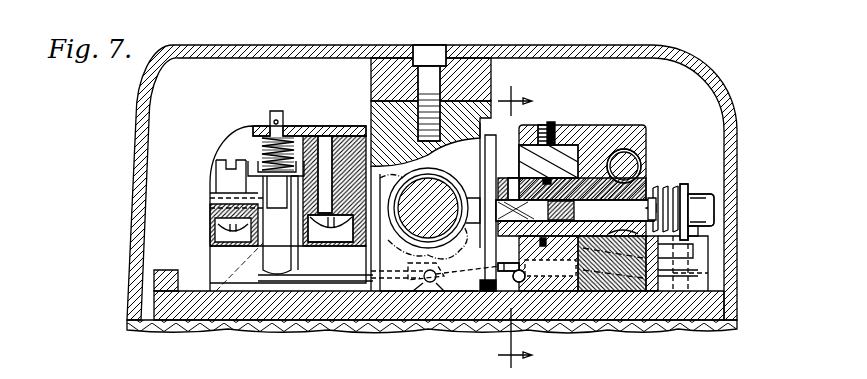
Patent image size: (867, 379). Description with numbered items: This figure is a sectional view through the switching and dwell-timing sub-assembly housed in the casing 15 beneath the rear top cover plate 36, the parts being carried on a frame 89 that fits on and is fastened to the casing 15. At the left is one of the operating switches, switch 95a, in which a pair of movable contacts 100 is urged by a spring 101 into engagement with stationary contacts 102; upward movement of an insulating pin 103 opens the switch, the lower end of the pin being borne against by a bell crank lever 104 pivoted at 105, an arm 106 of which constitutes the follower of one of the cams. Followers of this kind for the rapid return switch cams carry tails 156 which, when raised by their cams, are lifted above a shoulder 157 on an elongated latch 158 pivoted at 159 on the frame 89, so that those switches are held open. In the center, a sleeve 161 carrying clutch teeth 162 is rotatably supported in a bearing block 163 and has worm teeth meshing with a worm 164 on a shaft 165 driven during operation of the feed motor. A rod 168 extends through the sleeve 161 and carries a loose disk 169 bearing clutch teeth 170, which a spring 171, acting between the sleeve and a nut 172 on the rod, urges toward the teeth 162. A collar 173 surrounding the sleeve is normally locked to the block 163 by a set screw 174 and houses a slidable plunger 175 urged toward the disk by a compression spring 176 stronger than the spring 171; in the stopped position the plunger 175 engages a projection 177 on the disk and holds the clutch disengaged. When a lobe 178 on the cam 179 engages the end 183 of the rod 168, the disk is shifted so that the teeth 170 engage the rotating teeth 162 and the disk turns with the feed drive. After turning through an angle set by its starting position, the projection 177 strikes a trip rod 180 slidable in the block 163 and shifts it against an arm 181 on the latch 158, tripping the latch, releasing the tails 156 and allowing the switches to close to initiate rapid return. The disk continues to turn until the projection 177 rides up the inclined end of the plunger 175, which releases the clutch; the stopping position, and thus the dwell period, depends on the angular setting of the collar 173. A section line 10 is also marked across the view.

The rear top cover plate 36 is at (729, 100).
The casing 15 is at (729, 318).
The frame 89 is at (180, 283).
The spring 101 is at (252, 110).
The movable contacts 100 is at (254, 145).
The switch 95a is at (270, 200).
The stationary contacts 102 is at (318, 190).
The insulating pin 103 is at (291, 253).
The bell crank lever 104 is at (248, 272).
The disk 169 is at (470, 132).
The lobe 178 is at (420, 147).
The cam 179 is at (400, 176).
The end of rod 183 is at (452, 183).
The arm 106 is at (423, 256).
The pivot 105 is at (418, 283).
The clutch teeth 170 is at (496, 172).
The section line 10 is at (516, 225).
The bearing block 163 is at (606, 130).
The collar 173 is at (573, 140).
The set screw 174 is at (548, 118).
The worm 164 is at (622, 150).
The shaft 165 is at (630, 158).
The plunger 175 is at (572, 189).
The projection 177 is at (575, 210).
The compression spring 176 is at (566, 204).
The rod 168 is at (572, 231).
The tails 156 is at (623, 232).
The clutch teeth 162 is at (528, 235).
The rod 180 is at (514, 274).
The shoulder 157 is at (677, 264).
The sleeve 161 is at (644, 195).
The spring 171 is at (665, 178).
The nut 172 is at (690, 183).
The pivot 159 is at (706, 202).
The latch 158 is at (680, 238).
The arm 181 is at (700, 267).